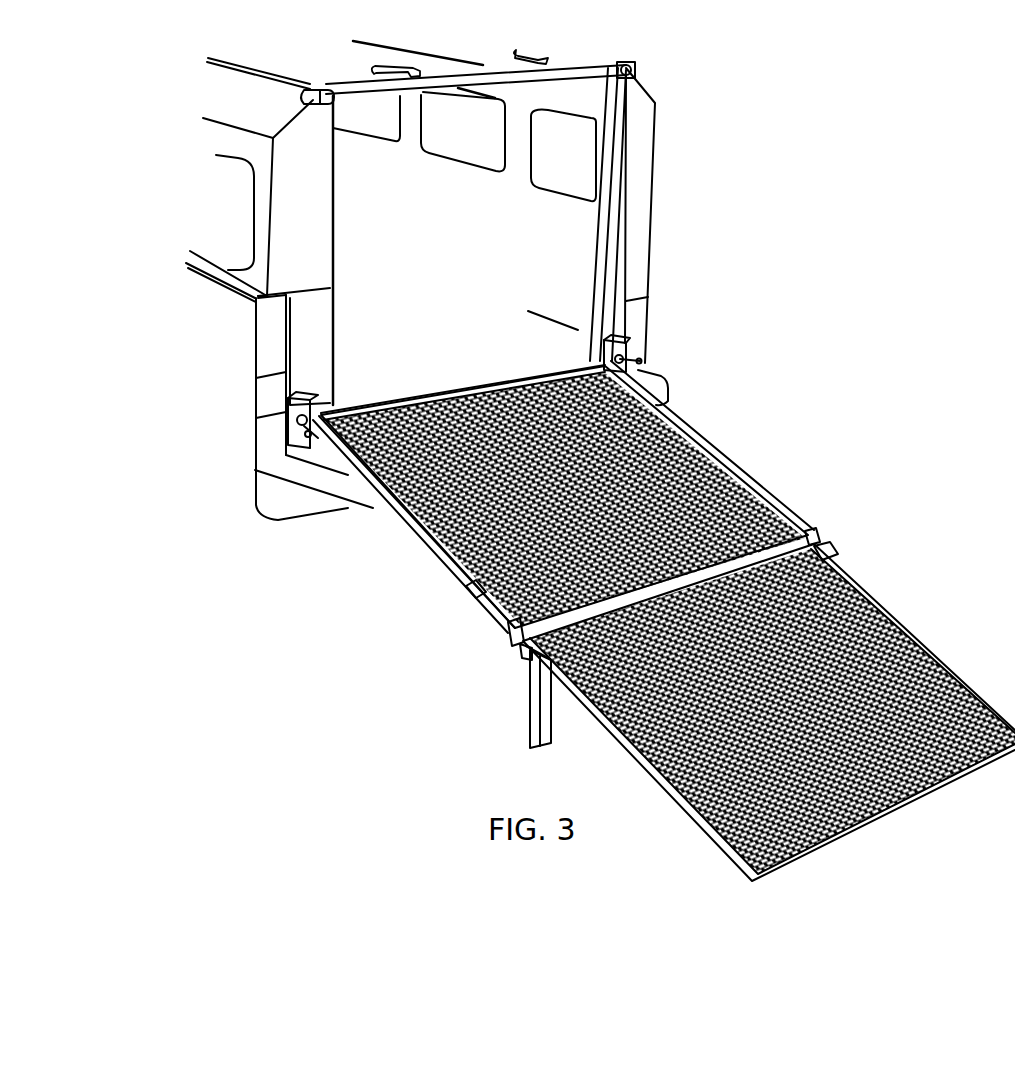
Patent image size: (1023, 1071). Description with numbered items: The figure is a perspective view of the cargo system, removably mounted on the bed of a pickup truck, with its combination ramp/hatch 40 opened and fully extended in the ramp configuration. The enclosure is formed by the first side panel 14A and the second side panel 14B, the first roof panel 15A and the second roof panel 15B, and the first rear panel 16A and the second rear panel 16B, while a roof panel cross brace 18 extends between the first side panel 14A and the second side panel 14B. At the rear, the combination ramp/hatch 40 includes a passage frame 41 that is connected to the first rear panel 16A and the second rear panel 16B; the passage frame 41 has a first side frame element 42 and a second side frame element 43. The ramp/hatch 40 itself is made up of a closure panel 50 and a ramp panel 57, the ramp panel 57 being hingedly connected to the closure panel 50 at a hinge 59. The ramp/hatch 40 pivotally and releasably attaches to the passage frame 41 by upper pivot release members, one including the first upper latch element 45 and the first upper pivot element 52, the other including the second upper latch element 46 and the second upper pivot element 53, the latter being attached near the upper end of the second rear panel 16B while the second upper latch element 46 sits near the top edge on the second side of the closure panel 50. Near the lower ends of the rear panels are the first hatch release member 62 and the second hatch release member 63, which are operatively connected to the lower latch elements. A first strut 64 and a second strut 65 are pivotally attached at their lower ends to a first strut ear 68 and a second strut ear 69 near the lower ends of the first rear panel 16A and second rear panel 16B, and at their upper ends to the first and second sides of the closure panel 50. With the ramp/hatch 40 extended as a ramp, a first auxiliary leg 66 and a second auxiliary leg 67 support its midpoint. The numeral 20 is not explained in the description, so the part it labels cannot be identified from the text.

The vehicle 20 is at (255, 30).
The first side panel 14A is at (205, 130).
The second side panel 14B is at (505, 158).
The first roof panel 15A is at (235, 58).
The second roof panel 15B is at (452, 48).
The first rear panel 16A is at (303, 245).
The second rear panel 16B is at (637, 188).
The roof panel cross brace 18 is at (632, 60).
The combination ramp/hatch 40 is at (810, 505).
The passage frame 41 is at (333, 205).
The first side frame element 42 is at (325, 322).
The second side frame element 43 is at (578, 258).
The first upper latch element 45 is at (500, 622).
The second upper latch element 46 is at (803, 527).
The closure panel 50 is at (462, 588).
The first upper pivot element 52 is at (305, 80).
The second upper pivot element 53 is at (620, 55).
The ramp panel 57 is at (896, 617).
The hinge 59 is at (510, 642).
The first hatch release member 62 is at (300, 420).
The second hatch release member 63 is at (620, 342).
The first strut 64 is at (365, 498).
The second strut 65 is at (757, 450).
The first auxiliary leg 66 is at (520, 712).
The second auxiliary leg 67 is at (828, 545).
The first strut ear 68 is at (308, 440).
The second strut ear 69 is at (636, 353).